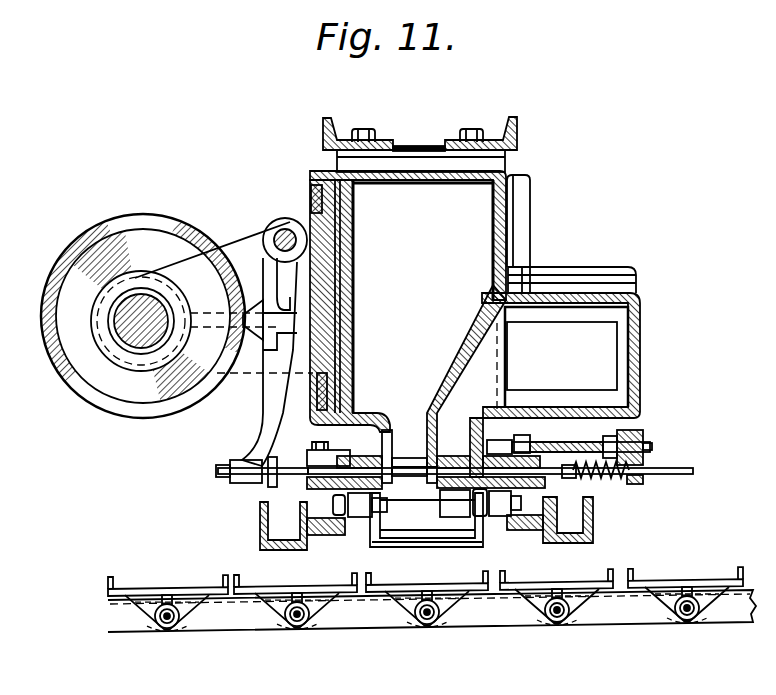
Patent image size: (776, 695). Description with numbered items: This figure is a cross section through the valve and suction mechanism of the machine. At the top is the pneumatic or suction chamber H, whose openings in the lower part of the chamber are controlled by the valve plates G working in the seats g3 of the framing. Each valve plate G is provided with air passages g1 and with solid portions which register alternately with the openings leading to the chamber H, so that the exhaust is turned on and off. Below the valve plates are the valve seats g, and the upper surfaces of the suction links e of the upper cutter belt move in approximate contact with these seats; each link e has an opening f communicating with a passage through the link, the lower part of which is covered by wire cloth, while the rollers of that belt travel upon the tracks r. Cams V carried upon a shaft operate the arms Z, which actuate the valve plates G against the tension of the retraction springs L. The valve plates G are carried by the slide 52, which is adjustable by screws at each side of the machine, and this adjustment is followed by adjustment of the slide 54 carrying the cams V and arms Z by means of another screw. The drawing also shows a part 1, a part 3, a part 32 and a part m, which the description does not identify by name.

The track beam 1 is at (508, 622).
The rail 3 is at (126, 592).
The rod 32 is at (308, 461).
The slide 52 is at (522, 460).
The slide 54 is at (308, 229).
The cams V is at (66, 268).
The arms Z is at (266, 403).
The pneumatic or suction chamber H is at (475, 300).
The air passages g1 is at (398, 470).
The outlet opening m is at (405, 468).
The valve seats g is at (455, 502).
The seats of the framing g3 is at (493, 518).
The suction links e is at (397, 522).
The opening f is at (432, 530).
The tracks r is at (340, 524).
The valve plates G is at (550, 476).
The retraction springs L is at (617, 478).